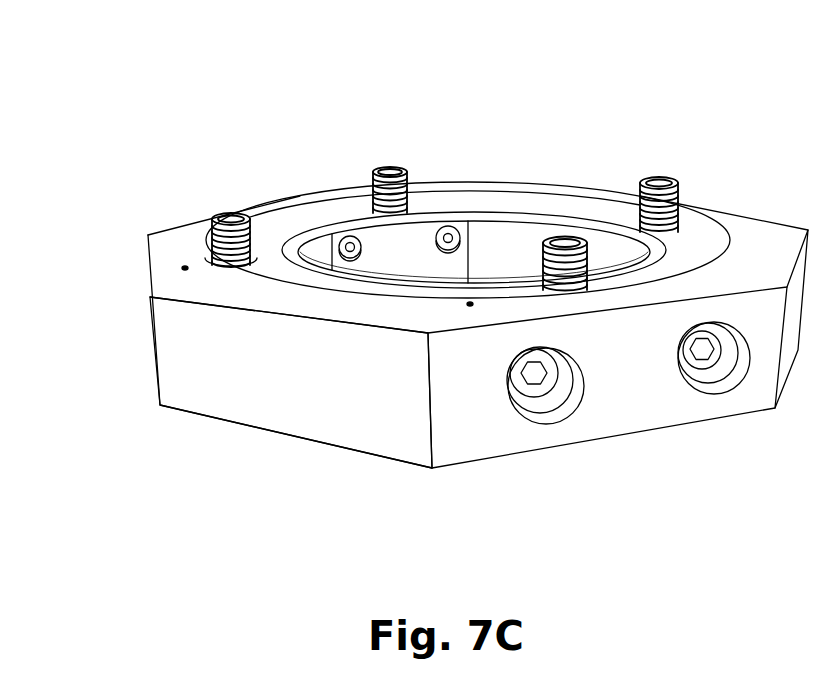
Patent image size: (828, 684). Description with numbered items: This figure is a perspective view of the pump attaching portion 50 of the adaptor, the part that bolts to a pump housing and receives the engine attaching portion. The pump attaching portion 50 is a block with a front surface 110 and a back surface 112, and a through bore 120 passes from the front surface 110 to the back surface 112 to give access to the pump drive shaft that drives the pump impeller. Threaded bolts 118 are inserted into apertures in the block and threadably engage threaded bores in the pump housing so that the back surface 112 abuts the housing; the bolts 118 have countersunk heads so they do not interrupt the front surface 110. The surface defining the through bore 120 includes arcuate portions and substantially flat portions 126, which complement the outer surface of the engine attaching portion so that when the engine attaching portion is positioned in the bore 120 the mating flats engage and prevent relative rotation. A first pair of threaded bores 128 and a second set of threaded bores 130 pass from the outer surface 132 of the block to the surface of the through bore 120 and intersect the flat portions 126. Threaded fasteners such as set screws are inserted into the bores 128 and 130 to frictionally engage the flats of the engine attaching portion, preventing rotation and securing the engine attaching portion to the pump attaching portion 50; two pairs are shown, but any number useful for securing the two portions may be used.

The pump attaching portion 50 is at (214, 150).
The front surface 110 is at (289, 434).
The back surface 112 is at (170, 250).
The threaded bolts 118 is at (658, 176).
The through bore 120 is at (494, 290).
The substantially flat portions 126 is at (487, 238).
The first pair of threaded bores 128 is at (711, 374).
The second set of threaded bores 130 is at (347, 245).
The outer surface 132 is at (210, 365).